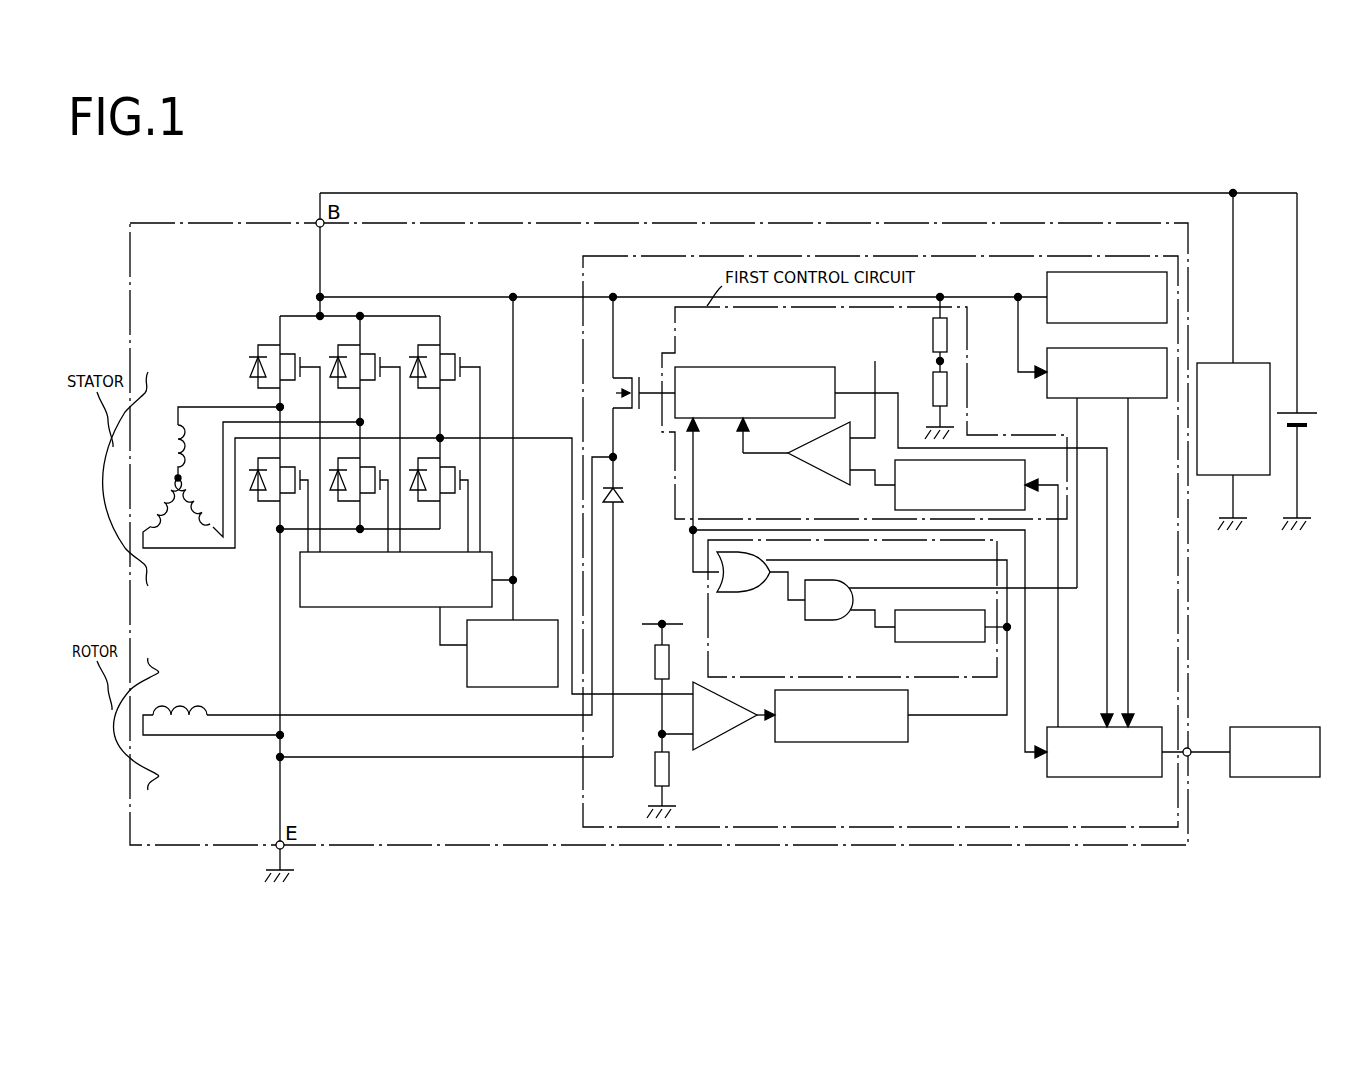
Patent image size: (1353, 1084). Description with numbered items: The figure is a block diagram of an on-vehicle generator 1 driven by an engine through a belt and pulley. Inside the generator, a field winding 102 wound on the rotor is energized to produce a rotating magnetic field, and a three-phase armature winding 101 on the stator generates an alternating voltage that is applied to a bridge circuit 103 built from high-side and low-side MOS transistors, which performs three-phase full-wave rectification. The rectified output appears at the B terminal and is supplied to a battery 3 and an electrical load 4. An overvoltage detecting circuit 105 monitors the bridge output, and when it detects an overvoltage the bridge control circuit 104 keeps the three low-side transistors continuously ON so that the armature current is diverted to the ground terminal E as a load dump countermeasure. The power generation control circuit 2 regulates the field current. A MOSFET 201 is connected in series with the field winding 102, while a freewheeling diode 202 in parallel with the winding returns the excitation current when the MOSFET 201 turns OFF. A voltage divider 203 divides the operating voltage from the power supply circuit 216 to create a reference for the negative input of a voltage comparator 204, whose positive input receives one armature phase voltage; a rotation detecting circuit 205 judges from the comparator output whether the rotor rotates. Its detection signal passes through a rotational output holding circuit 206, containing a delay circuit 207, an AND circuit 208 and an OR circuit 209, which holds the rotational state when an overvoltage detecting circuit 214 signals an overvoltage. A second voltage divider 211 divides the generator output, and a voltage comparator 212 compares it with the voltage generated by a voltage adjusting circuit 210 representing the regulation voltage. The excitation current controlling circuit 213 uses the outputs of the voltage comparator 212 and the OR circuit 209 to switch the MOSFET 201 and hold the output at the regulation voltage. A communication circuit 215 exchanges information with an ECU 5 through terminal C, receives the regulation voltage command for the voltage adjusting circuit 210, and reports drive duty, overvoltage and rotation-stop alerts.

The on-vehicle generator 1 is at (316, 222).
The power generation control circuit 2 is at (1092, 256).
The battery 3 is at (1300, 413).
The electrical load 4 is at (1250, 363).
The ECU 5 is at (1277, 727).
The armature winding 101 is at (163, 440).
The field winding 102 is at (183, 706).
The bridge circuit 103 is at (290, 316).
The bridge control circuit 104 is at (322, 608).
The overvoltage detecting circuit 105 is at (467, 660).
The MOSFET 201 is at (627, 378).
The freewheeling diode 202 is at (620, 489).
The voltage divider 203 is at (651, 727).
The voltage comparator 204 is at (723, 734).
The rotation detecting circuit 205 is at (845, 743).
The rotational output holding circuit 206 is at (705, 590).
The delay circuit 207 is at (895, 628).
The AND circuit 208 is at (850, 580).
The OR circuit 209 is at (743, 592).
The voltage adjusting circuit 210 is at (895, 500).
The voltage divider 211 is at (922, 360).
The voltage comparator 212 is at (828, 478).
The excitation current controlling circuit 213 is at (764, 367).
The overvoltage detecting circuit 214 is at (1062, 400).
The communication circuit 215 is at (1122, 778).
The power supply circuit 216 is at (1047, 288).